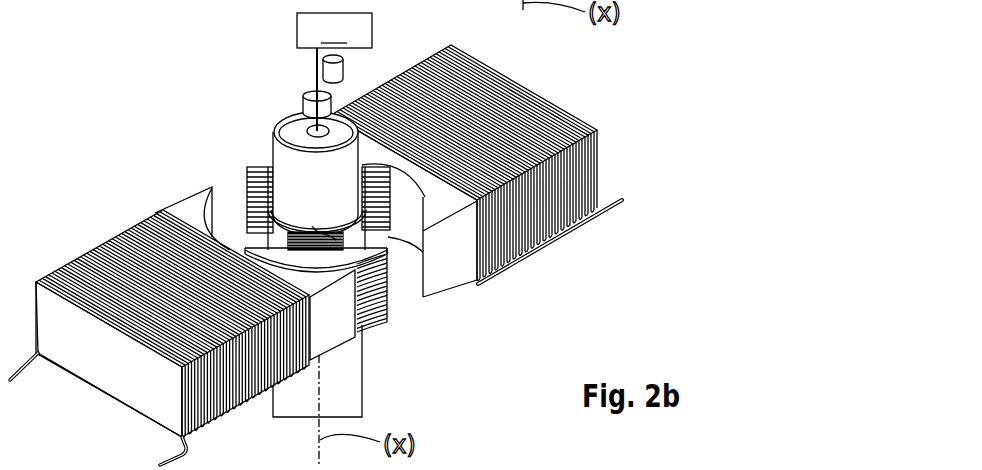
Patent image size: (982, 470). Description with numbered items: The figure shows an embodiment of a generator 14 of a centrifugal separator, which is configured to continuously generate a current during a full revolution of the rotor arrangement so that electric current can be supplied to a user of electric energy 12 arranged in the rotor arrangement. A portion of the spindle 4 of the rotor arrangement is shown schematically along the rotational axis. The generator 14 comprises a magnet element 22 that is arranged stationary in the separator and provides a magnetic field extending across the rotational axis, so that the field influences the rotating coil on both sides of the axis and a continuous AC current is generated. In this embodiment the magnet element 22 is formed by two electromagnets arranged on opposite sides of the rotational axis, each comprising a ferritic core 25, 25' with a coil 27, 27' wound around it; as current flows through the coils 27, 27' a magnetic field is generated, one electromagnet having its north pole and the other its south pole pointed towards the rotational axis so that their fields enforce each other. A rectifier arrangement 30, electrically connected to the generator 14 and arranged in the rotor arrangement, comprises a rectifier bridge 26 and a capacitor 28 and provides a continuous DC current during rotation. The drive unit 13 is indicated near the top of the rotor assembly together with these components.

The spindle 4 is at (353, 395).
The user of electric energy 12 is at (334, 30).
The drive unit 13 is at (260, 43).
The generator 14 is at (182, 107).
The magnet element 22 is at (377, 358).
The ferritic core 25 is at (174, 197).
The ferritic core 25' is at (429, 251).
The rectifier bridge 26 is at (303, 110).
The coil 27 is at (159, 320).
The coil 27' is at (506, 164).
The capacitor 28 is at (343, 72).
The rectifier arrangement 30 is at (273, 72).